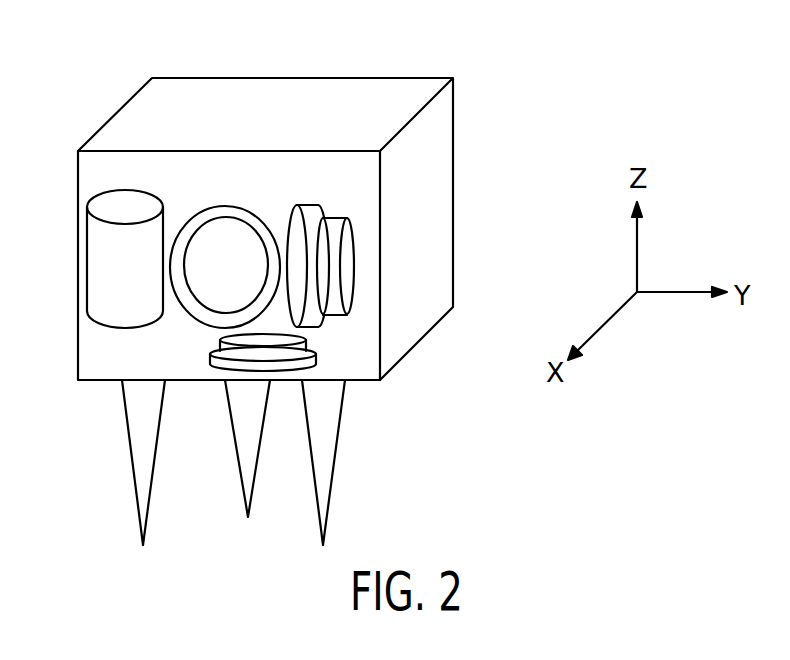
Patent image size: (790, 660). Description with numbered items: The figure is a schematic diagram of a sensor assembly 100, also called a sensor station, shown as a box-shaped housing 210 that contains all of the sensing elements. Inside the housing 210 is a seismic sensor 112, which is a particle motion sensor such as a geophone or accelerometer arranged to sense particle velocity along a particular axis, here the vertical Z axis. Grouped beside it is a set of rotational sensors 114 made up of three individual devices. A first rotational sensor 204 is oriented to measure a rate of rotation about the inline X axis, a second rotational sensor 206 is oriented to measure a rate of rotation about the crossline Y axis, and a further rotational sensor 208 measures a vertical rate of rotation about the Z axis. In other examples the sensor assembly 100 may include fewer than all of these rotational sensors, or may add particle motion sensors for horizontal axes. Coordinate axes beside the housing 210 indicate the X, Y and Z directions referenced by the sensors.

The sensor assembly 100 is at (503, 48).
The seismic sensor 112 is at (97, 200).
The rotational sensor set (gyroscopes) 114 is at (355, 185).
The first rotational sensor 204 is at (187, 308).
The second rotational sensor 206 is at (355, 300).
The rotational sensor 208 is at (228, 369).
The housing 210 is at (420, 343).